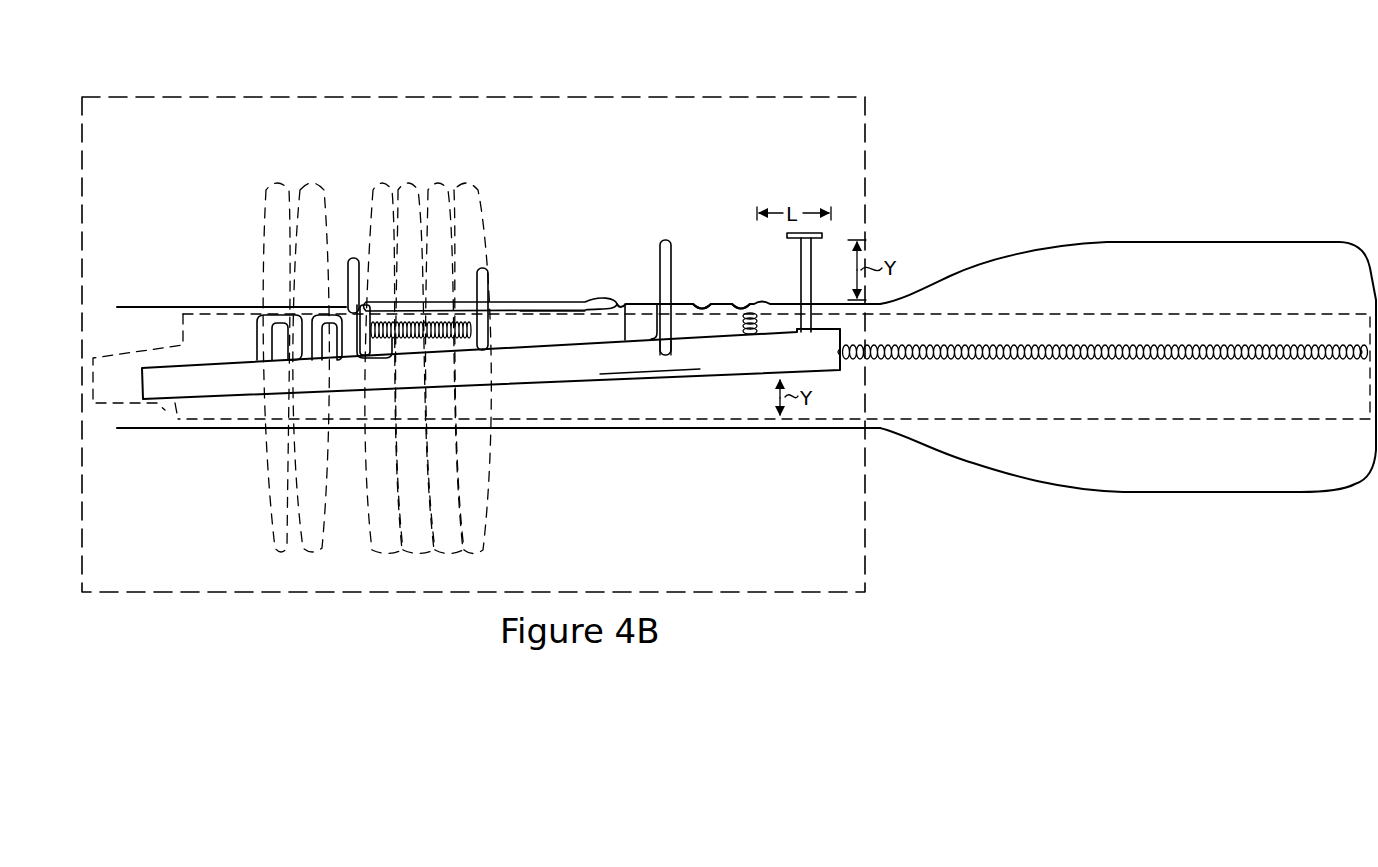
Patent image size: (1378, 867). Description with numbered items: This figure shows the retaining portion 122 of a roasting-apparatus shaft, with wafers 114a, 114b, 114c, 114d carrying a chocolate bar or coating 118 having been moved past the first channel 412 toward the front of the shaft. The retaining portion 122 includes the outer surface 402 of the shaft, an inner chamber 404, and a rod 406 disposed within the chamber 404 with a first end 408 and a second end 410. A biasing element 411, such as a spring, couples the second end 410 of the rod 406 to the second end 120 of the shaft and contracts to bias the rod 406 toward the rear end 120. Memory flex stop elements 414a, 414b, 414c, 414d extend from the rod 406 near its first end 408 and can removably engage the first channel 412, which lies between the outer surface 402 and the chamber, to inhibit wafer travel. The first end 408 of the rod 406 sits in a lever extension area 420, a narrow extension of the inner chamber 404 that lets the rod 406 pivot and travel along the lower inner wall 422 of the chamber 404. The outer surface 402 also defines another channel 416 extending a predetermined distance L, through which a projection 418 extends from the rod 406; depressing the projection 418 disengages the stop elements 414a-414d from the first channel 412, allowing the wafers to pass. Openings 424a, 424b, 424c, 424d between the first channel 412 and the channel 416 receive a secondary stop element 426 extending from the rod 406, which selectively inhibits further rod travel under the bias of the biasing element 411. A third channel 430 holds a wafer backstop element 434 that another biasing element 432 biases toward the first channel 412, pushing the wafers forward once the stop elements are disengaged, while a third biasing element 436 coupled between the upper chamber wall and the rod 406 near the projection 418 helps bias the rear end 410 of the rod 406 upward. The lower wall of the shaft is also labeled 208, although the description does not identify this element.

The retaining portion 122 is at (567, 97).
The chocolate bar or coating 118 is at (270, 202).
The wafer 114a is at (301, 182).
The wafer 114b is at (410, 182).
The wafer 114c is at (430, 182).
The wafer 114d is at (460, 183).
The outer surface 402 is at (142, 306).
The third channel 430 is at (520, 307).
The biasing element 432 is at (587, 327).
The channel 416 is at (820, 303).
The lower housing wall 208 is at (580, 430).
The lower inner wall 422 is at (200, 442).
The second end of the shaft 120 is at (1344, 242).
The inner chamber 404 is at (1140, 427).
The lever extension area 420 is at (165, 410).
The first end of the rod 408 is at (136, 371).
The rod 406 is at (670, 379).
The second end of the rod 410 is at (845, 369).
The biasing element 411 is at (1018, 360).
The memory flex stop element 414d is at (273, 315).
The memory flex stop element 414c is at (327, 323).
The memory flex stop element 414b is at (352, 257).
The first channel 412 is at (344, 304).
The memory flex stop element 414a is at (407, 322).
The wafer backstop element 434 is at (483, 267).
The opening 424a is at (637, 307).
The secondary stop element 426 is at (664, 242).
The opening 424b is at (667, 312).
The opening 424c is at (703, 305).
The opening 424d is at (742, 306).
The third biasing element 436 is at (745, 335).
The projection 418 is at (787, 236).